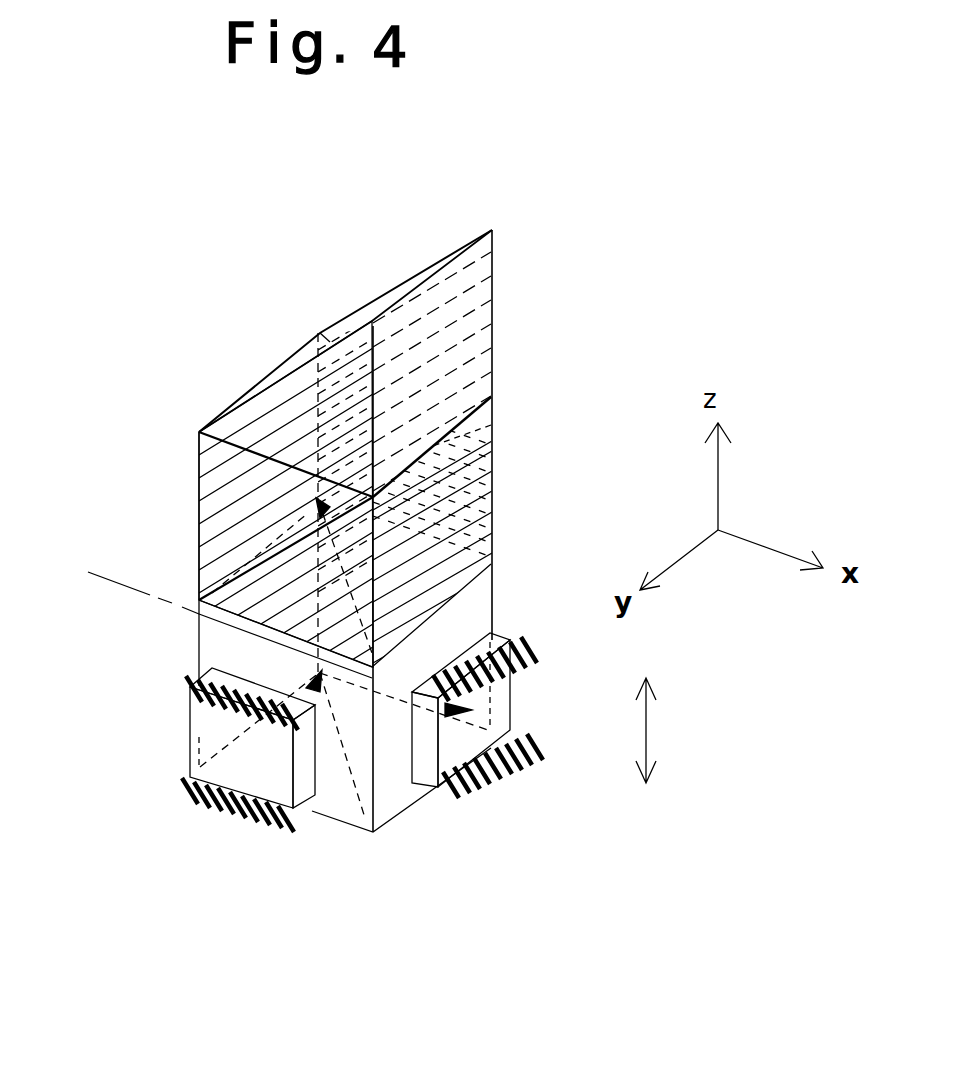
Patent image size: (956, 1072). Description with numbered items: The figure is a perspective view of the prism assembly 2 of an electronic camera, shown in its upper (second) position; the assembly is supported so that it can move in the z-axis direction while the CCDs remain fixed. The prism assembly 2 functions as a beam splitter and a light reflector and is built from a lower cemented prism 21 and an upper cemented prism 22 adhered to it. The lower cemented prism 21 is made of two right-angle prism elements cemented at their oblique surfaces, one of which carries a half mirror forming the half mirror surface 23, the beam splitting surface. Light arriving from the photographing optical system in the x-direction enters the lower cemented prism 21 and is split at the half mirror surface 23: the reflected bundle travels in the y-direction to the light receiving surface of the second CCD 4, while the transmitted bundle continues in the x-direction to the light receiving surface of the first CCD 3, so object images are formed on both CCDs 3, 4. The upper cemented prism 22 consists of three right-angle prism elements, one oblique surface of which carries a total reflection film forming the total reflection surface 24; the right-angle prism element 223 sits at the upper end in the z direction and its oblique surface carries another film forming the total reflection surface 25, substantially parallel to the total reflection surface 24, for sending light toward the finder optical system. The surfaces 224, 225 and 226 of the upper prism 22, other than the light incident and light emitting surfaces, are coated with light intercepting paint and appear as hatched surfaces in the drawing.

The prism assembly 2 is at (517, 277).
The lower cemented prism 21 is at (196, 640).
The upper cemented prism 22 is at (197, 489).
The half mirror surface 23 is at (358, 745).
The total reflection surface 24 is at (410, 452).
The total reflection surface 25 is at (377, 310).
The right-angle prism element 223 is at (493, 331).
The surface 224 is at (492, 515).
The surface 225 is at (213, 523).
The surface 226 is at (491, 425).
The first CCD 3 is at (512, 705).
The second CCD 4 is at (200, 735).